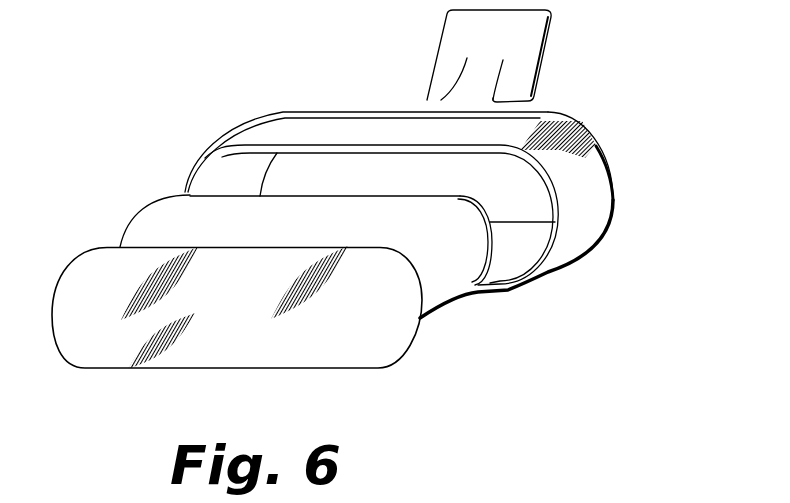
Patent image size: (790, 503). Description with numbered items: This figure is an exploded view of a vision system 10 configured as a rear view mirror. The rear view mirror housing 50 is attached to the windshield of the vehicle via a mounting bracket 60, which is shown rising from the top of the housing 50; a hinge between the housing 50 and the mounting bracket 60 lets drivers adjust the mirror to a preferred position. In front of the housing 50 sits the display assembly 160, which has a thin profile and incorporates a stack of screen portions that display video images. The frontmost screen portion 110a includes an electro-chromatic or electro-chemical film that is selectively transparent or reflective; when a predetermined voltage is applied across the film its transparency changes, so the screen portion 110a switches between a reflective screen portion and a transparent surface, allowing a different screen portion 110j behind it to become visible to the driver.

The vision system 10 is at (623, 108).
The rear view mirror housing 50 is at (617, 190).
The mounting bracket 60 is at (547, 62).
The screen portion 110a is at (403, 352).
The screen portion 110j is at (461, 306).
The display assembly 160 is at (103, 204).